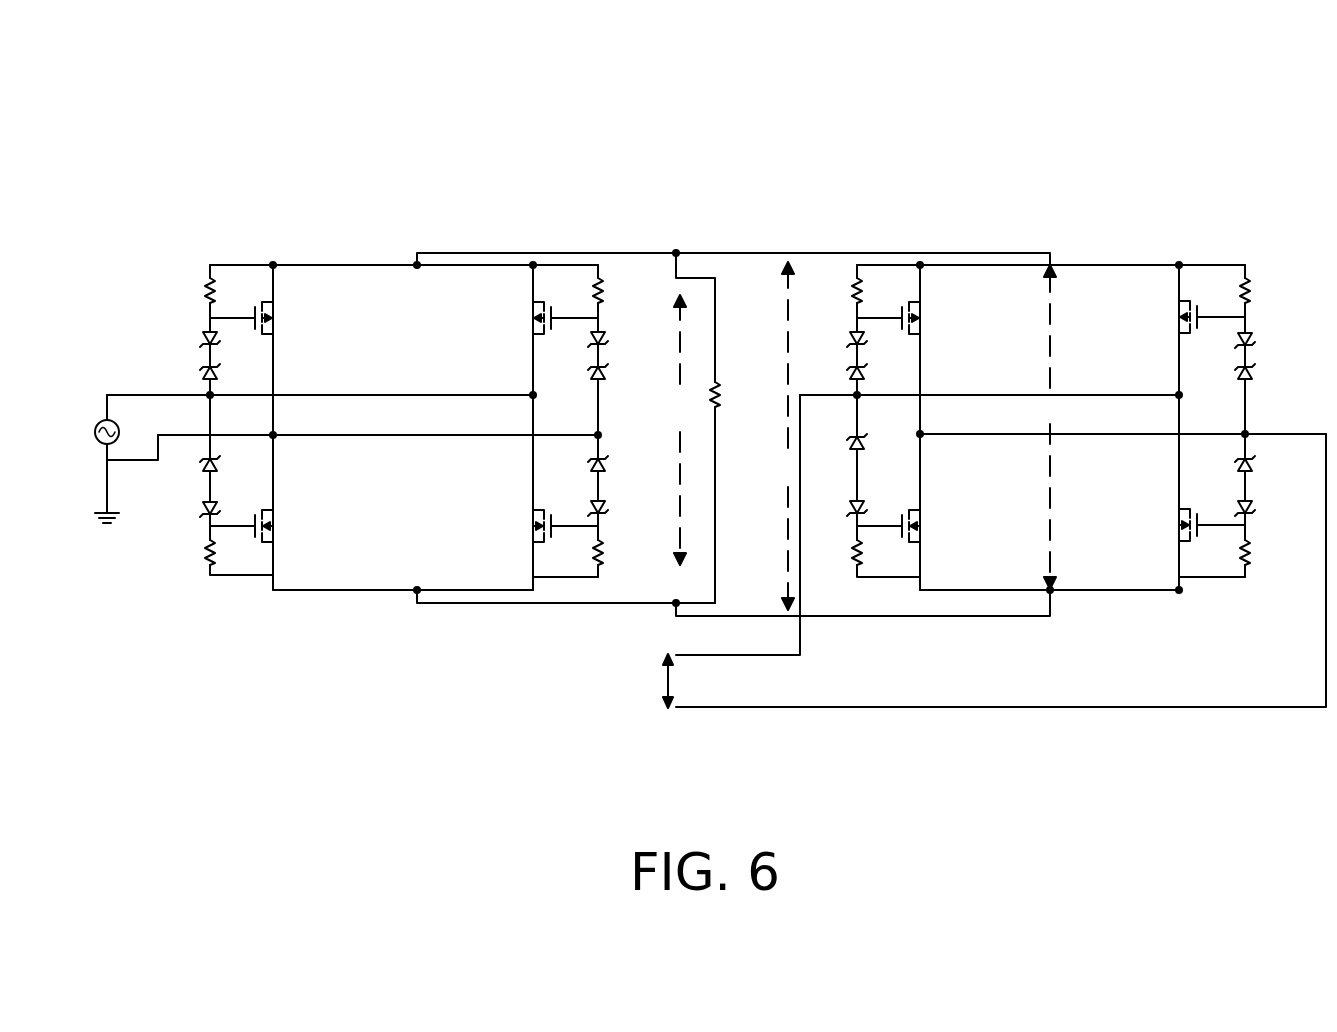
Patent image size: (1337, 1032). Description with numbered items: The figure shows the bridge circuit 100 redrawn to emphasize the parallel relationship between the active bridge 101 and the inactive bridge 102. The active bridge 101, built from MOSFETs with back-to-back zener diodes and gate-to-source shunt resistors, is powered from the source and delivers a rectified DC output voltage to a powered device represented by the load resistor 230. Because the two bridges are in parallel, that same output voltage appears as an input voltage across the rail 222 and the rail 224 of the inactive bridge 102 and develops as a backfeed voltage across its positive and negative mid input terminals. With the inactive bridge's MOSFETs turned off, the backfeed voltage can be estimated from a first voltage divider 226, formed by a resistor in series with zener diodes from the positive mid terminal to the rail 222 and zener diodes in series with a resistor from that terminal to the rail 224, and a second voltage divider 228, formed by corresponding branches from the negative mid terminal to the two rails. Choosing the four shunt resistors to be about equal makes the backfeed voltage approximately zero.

The bridge circuit 100 is at (682, 62).
The active bridge 101 is at (378, 210).
The inactive bridge 102 is at (1086, 228).
The rail 222 is at (1118, 265).
The rail 224 is at (1052, 592).
The first voltage divider 226 is at (860, 242).
The second voltage divider 228 is at (1245, 595).
The load resistor 230 is at (718, 428).